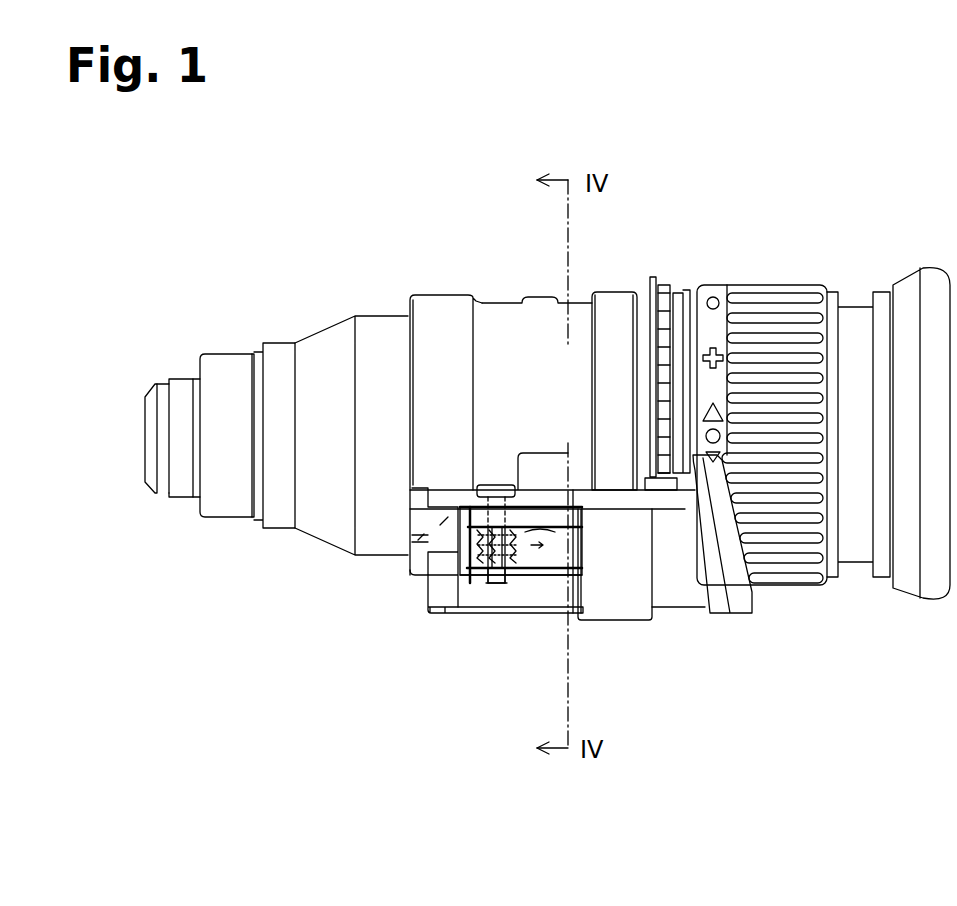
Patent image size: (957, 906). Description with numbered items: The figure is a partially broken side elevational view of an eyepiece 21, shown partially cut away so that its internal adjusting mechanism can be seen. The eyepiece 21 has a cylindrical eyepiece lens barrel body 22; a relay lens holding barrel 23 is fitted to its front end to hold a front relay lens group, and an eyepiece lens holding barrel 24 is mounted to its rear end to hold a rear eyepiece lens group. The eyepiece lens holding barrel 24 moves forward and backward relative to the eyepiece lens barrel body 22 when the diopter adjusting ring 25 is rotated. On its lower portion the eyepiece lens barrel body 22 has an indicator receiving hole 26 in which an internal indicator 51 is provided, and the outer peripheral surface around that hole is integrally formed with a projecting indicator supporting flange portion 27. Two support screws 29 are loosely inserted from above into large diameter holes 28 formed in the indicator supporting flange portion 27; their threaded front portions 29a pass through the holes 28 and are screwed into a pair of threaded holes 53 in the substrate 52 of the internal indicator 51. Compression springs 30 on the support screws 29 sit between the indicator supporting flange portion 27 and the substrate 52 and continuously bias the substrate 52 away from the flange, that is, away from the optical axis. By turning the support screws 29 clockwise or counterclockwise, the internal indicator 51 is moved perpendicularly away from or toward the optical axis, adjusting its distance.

The eyepiece 21 is at (495, 180).
The eyepiece lens barrel body 22 is at (433, 320).
The relay lens holding barrel 23 is at (276, 373).
The eyepiece lens holding barrel 24 is at (853, 308).
The diopter adjusting ring 25 is at (773, 303).
The indicator receiving hole 26 is at (533, 600).
The indicator supporting flange portion 27 is at (470, 490).
The large diameter holes 28 is at (482, 508).
The support screws 29 is at (496, 485).
The threaded front portions 29a is at (488, 582).
The compression springs 30 is at (463, 553).
The internal indicator 51 is at (552, 547).
The substrate 52 is at (507, 578).
The threaded holes 53 is at (497, 583).